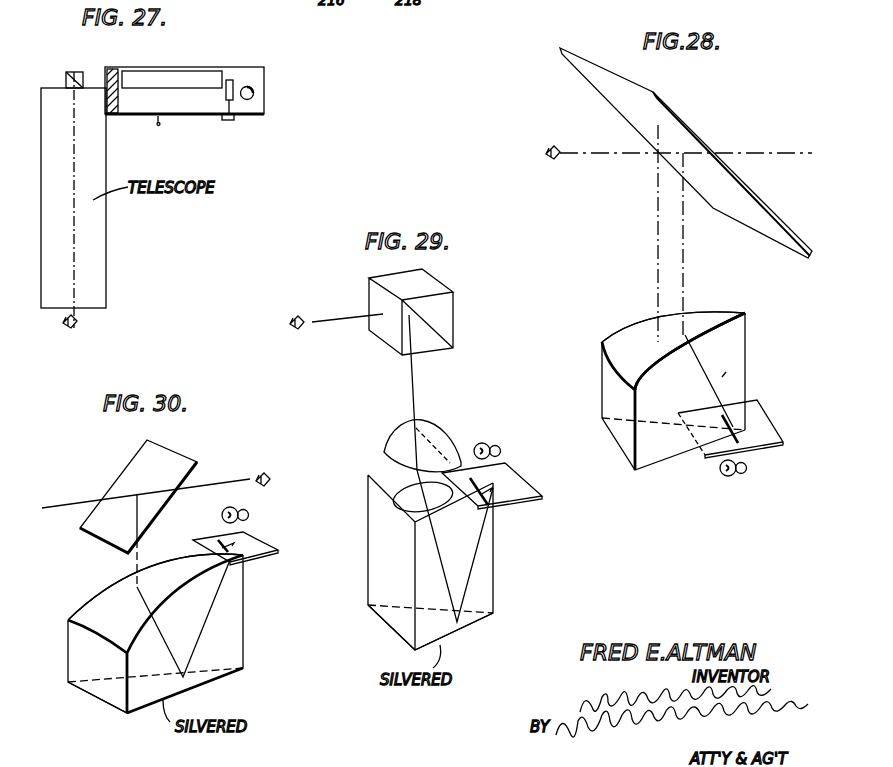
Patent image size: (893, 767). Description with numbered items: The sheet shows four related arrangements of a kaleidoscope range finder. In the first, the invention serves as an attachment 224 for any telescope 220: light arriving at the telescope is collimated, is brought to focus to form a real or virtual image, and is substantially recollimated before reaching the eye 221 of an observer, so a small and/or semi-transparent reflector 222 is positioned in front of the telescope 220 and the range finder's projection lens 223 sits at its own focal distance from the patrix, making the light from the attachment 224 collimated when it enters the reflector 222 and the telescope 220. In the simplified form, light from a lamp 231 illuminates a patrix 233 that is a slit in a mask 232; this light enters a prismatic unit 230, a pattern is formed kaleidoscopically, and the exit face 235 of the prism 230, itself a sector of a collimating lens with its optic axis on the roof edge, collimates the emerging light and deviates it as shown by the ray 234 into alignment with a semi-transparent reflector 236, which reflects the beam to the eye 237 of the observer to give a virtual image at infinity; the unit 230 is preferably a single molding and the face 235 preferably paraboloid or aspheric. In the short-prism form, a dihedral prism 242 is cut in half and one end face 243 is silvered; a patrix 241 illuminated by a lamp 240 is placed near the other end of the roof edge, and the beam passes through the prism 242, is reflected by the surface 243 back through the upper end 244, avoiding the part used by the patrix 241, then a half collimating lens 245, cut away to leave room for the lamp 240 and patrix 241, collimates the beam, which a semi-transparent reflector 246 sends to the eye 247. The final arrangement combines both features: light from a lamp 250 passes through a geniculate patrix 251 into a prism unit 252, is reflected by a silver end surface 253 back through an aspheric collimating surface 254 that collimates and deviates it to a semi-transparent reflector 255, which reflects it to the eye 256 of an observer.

In FIG. 27, the telescope 220 is at (97, 251).
In FIG. 27, the eye of observer 221 is at (80, 326).
In FIG. 27, the semi-transparent reflector 222 is at (68, 72).
In FIG. 27, the projection lens 223 is at (118, 112).
In FIG. 27, the attachment 224 is at (178, 75).
In FIG. 28, the prismatic unit 230 is at (655, 455).
In FIG. 28, the lamp 231 is at (733, 478).
In FIG. 28, the mask 232 is at (765, 423).
In FIG. 28, the patrix 233 is at (733, 427).
In FIG. 28, the ray 234 is at (708, 370).
In FIG. 28, the exit face 235 is at (643, 328).
In FIG. 28, the semi-transparent reflector 236 is at (739, 212).
In FIG. 28, the eye of observer 237 is at (556, 143).
In FIG. 29, the lamp 240 is at (486, 441).
In FIG. 29, the patrix 241 is at (495, 510).
In FIG. 29, the dihedral prism 242 is at (483, 578).
In FIG. 29, the end face 243 is at (470, 622).
In FIG. 29, the upper end 244 is at (387, 477).
In FIG. 29, the collimating lens 245 is at (397, 430).
In FIG. 29, the semi-transparent reflector 246 is at (442, 337).
In FIG. 29, the eye of observer 247 is at (308, 330).
In FIG. 30, the lamp 250 is at (222, 515).
In FIG. 30, the geniculate patrix 251 is at (230, 547).
In FIG. 30, the prism unit 252 is at (233, 638).
In FIG. 30, the silver end surface 253 is at (145, 698).
In FIG. 30, the aspheric collimating surface 254 is at (108, 593).
In FIG. 30, the semi-transparent reflector 255 is at (128, 470).
In FIG. 30, the eye of observer 256 is at (272, 455).